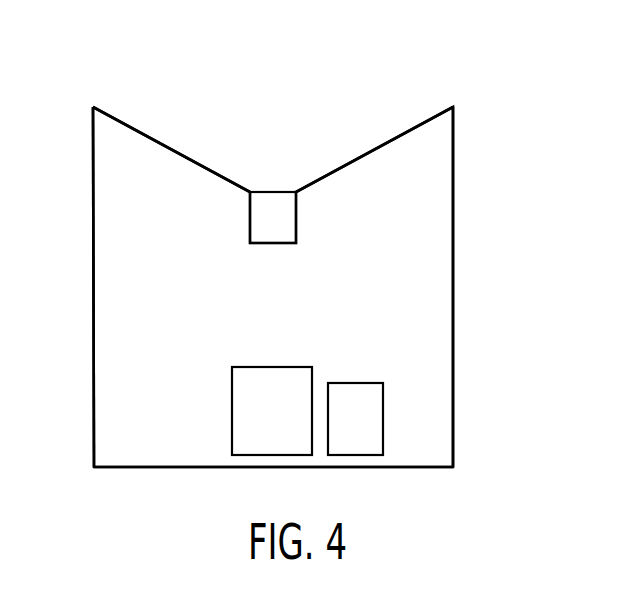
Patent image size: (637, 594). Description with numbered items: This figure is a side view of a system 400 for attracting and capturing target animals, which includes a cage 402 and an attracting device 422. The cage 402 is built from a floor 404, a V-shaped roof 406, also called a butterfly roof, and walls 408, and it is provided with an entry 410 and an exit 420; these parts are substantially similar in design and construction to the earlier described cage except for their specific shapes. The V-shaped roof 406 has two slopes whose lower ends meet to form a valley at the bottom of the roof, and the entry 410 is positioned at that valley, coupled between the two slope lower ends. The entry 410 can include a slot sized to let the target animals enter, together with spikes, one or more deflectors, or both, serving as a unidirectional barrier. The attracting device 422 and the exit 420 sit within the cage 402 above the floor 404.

The system 400 is at (133, 52).
The cage 402 is at (460, 152).
The floor 404 is at (166, 467).
The V-shaped roof 406 is at (175, 148).
The walls 408 is at (93, 283).
The entry 410 is at (272, 203).
The exit 420 is at (272, 378).
The attracting device 422 is at (353, 397).